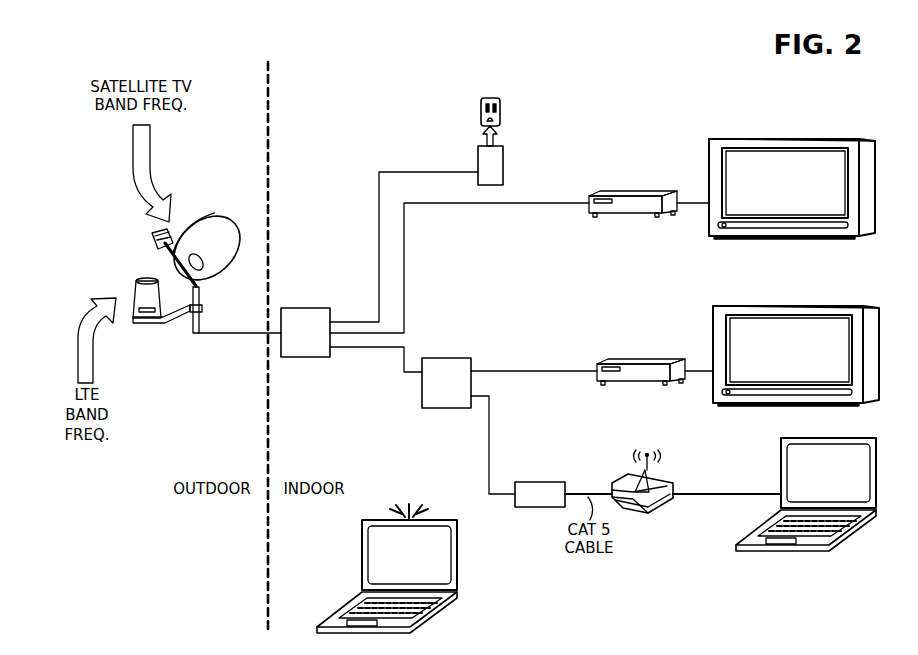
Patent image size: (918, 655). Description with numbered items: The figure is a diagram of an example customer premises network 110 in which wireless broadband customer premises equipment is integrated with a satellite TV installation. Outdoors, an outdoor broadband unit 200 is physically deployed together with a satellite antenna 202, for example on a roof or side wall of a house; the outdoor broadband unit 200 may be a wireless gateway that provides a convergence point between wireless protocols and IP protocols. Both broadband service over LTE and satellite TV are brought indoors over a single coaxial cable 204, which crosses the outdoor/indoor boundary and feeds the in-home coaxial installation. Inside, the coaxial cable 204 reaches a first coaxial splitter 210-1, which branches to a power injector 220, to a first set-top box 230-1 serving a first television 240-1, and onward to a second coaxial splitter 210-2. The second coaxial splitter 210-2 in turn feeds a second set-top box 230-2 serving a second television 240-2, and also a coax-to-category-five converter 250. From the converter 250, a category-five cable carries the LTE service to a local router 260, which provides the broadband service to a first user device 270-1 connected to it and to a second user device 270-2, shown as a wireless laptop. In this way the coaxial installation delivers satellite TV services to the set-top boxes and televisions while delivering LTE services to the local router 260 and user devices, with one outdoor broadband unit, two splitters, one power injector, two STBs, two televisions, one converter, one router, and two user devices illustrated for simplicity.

The customer premises network 110 is at (88, 40).
The outdoor broadband unit 200 is at (130, 289).
The satellite antenna 202 is at (222, 232).
The coaxial cable 204 is at (222, 334).
The coaxial splitter 210-1 is at (316, 308).
The coaxial splitter 210-2 is at (458, 358).
The power injector 220 is at (478, 158).
The set-top box 230-1 is at (611, 192).
The set-top box 230-2 is at (618, 360).
The television 240-1 is at (826, 138).
The television 240-2 is at (832, 305).
The coax/Cat 5 converter 250 is at (554, 481).
The local router 260 is at (658, 520).
The user device 270-1 is at (781, 468).
The user device 270-2 is at (446, 604).